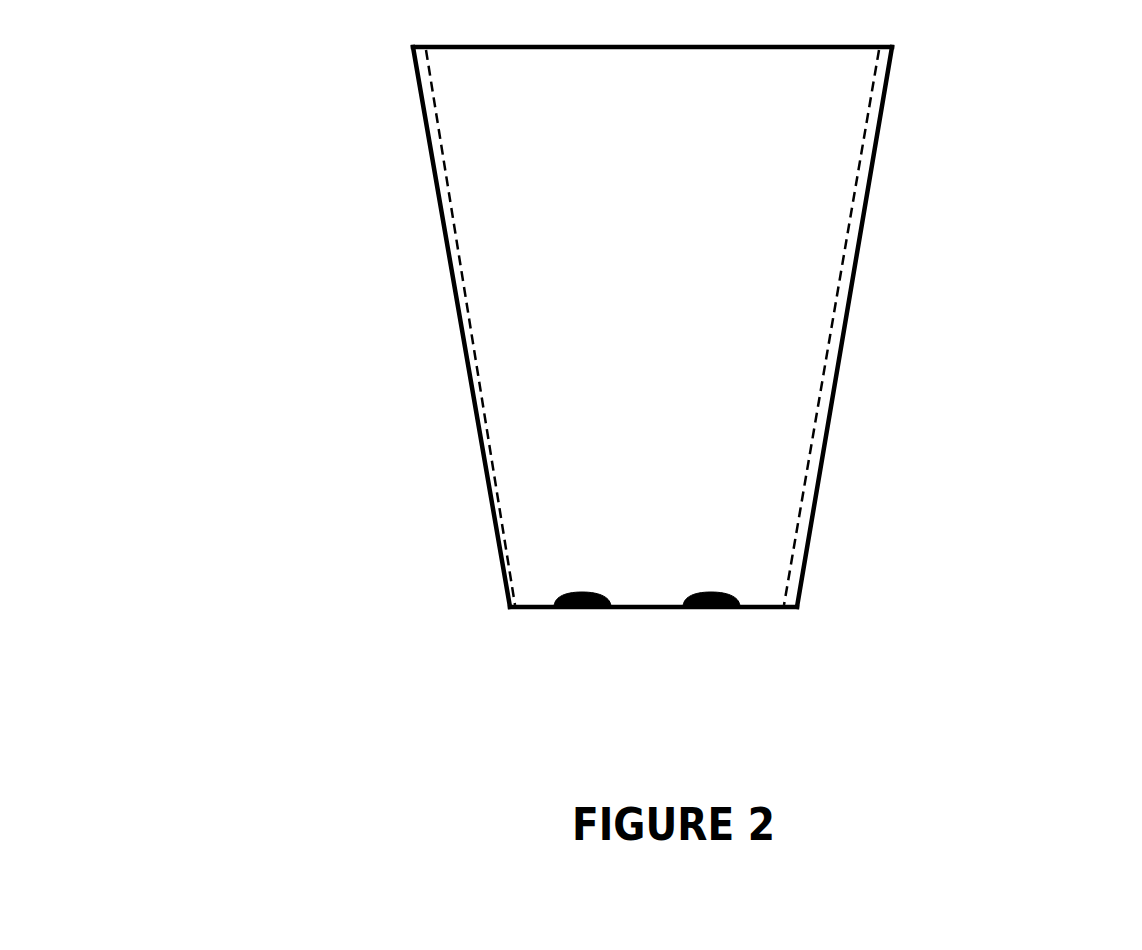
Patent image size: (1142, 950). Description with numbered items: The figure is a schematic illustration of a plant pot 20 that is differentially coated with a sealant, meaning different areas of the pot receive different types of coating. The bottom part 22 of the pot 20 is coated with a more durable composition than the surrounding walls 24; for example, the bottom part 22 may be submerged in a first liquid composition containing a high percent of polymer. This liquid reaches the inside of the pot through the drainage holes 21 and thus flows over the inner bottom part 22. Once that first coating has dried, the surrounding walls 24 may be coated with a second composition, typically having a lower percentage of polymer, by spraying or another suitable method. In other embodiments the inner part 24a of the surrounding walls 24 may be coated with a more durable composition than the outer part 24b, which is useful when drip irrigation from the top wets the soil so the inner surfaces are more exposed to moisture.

The plant pot 20 is at (652, 377).
The drainage holes 21 is at (715, 607).
The bottom part 22 is at (530, 600).
The surrounding walls 24 is at (546, 327).
The inner part of the surrounding walls 24a is at (426, 263).
The outer part of the surrounding walls 24b is at (417, 127).